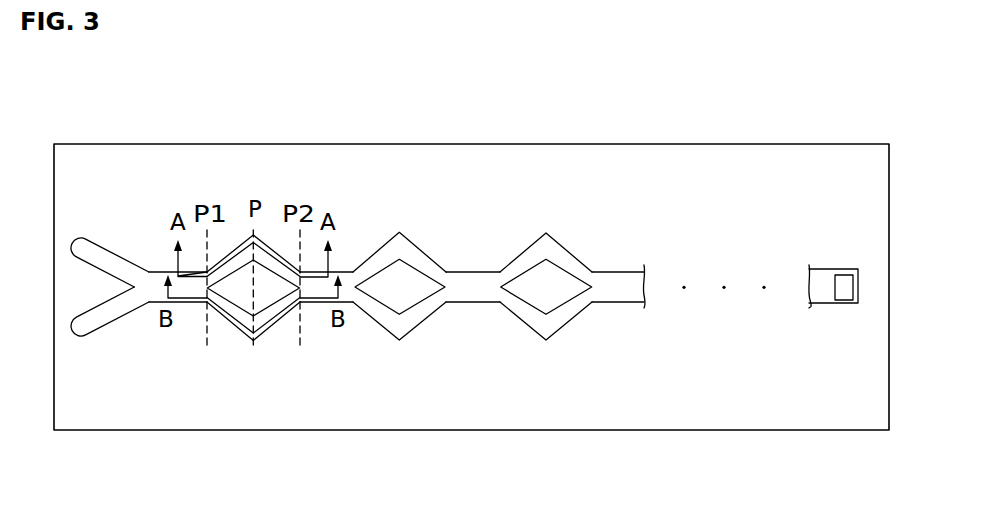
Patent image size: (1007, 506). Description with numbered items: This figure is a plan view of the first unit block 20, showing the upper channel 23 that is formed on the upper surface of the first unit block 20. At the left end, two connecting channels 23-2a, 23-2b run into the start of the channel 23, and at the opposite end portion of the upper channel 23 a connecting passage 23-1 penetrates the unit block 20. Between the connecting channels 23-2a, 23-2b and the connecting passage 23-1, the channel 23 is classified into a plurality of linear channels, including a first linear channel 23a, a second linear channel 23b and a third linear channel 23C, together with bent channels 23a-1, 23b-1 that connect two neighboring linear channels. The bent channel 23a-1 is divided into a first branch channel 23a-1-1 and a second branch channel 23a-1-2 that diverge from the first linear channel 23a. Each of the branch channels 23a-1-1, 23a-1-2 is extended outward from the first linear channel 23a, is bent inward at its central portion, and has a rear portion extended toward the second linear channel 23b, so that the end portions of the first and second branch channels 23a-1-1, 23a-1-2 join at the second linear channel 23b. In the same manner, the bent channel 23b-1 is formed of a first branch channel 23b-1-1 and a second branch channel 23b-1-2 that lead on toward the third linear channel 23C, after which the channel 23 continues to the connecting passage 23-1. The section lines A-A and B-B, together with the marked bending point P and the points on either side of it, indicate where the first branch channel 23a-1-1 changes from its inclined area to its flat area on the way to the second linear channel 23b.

The first unit block 20 is at (740, 120).
The upper channel 23 is at (615, 253).
The connecting passage 23-1 is at (843, 297).
The connecting channel 23-2a is at (93, 246).
The connecting channel 23-2b is at (107, 320).
The first linear channel 23a is at (150, 271).
The bent channel 23a-1 is at (285, 187).
The first branch channel 23a-1-1 is at (233, 257).
The second branch channel 23a-1-2 is at (270, 326).
The second linear channel 23b is at (351, 270).
The bent channel 23b-1 is at (438, 235).
The first branch channel 23b-1-1 is at (412, 253).
The second branch channel 23b-1-2 is at (393, 334).
The third linear channel 23C is at (480, 302).